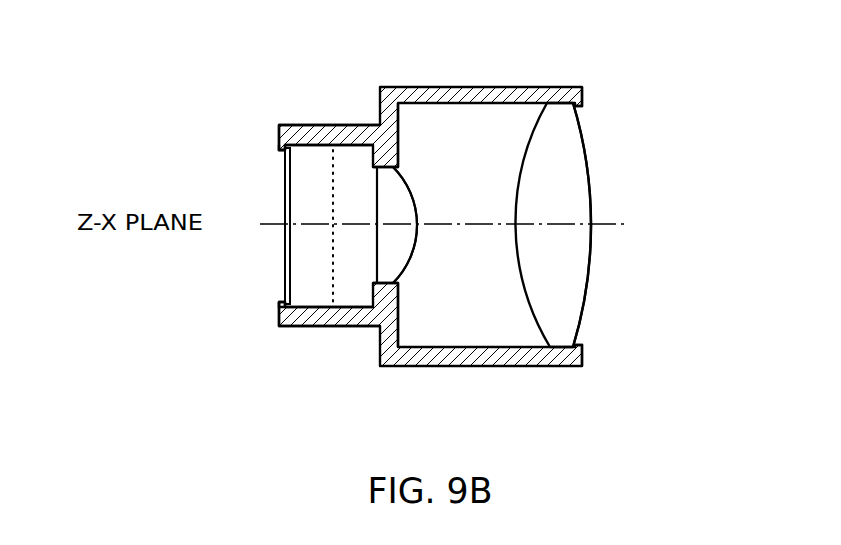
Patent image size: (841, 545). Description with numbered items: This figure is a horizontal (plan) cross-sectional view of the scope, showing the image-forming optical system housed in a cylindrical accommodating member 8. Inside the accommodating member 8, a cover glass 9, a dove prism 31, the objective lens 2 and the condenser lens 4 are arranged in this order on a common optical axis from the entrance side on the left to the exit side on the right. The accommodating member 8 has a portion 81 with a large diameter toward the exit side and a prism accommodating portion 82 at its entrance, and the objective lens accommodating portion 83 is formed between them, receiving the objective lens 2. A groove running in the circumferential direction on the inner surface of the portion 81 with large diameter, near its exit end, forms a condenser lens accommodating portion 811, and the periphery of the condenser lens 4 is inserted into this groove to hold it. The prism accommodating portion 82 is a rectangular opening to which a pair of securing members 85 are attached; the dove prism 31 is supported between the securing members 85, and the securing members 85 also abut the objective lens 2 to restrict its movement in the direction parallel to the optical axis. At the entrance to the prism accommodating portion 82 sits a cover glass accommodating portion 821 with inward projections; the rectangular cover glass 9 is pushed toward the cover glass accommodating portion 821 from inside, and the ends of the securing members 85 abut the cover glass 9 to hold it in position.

The objective lens 2 is at (414, 266).
The condenser lens 4 is at (572, 270).
The accommodating member 8 is at (549, 88).
The cover glass 9 is at (280, 250).
The dove prism 31 is at (357, 172).
The portion with a large diameter 81 is at (524, 109).
The prism accommodating portion 82 is at (312, 328).
The objective lens accommodating portion 83 is at (423, 162).
The securing member 85 is at (383, 293).
The condenser lens accommodating portion 811 is at (583, 115).
The cover glass accommodating portion 821 is at (278, 300).